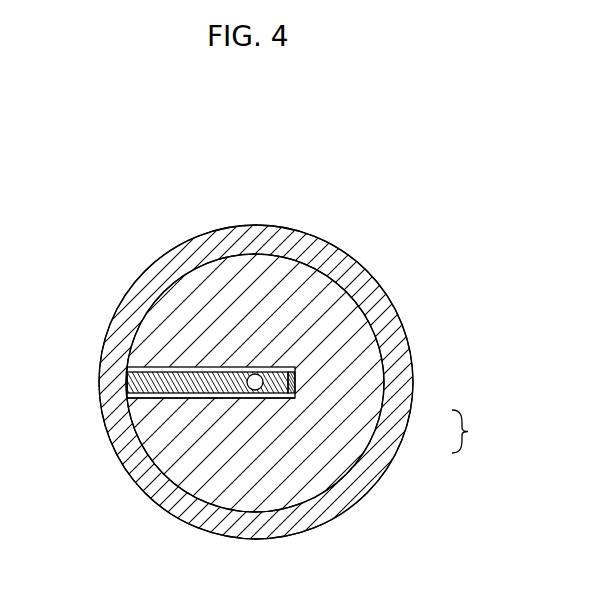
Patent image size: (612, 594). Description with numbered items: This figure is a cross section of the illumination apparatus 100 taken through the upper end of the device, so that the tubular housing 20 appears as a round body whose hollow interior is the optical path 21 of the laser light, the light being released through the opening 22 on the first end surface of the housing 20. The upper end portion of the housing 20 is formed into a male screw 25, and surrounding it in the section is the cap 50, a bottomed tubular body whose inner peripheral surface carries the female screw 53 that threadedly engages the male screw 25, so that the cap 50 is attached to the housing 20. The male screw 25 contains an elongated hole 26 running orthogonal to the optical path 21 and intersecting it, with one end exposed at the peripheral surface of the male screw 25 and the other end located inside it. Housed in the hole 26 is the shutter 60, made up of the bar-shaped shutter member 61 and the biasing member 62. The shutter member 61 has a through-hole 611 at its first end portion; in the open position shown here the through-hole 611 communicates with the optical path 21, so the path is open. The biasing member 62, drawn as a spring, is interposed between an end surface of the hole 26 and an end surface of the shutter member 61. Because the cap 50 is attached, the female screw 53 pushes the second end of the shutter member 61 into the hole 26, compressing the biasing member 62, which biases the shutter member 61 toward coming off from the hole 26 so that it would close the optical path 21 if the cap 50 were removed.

The illumination apparatus 100 is at (283, 200).
The cap 50 is at (126, 278).
The male screw 25 is at (162, 506).
The hole 26 is at (148, 367).
The housing 20 is at (373, 320).
The optical path 21 is at (258, 368).
The opening 22 is at (258, 368).
The female screw 53 is at (127, 380).
The shutter 60 is at (476, 431).
The shutter member 61 is at (290, 398).
The through-hole 611 is at (210, 400).
The biasing member 62 is at (297, 383).